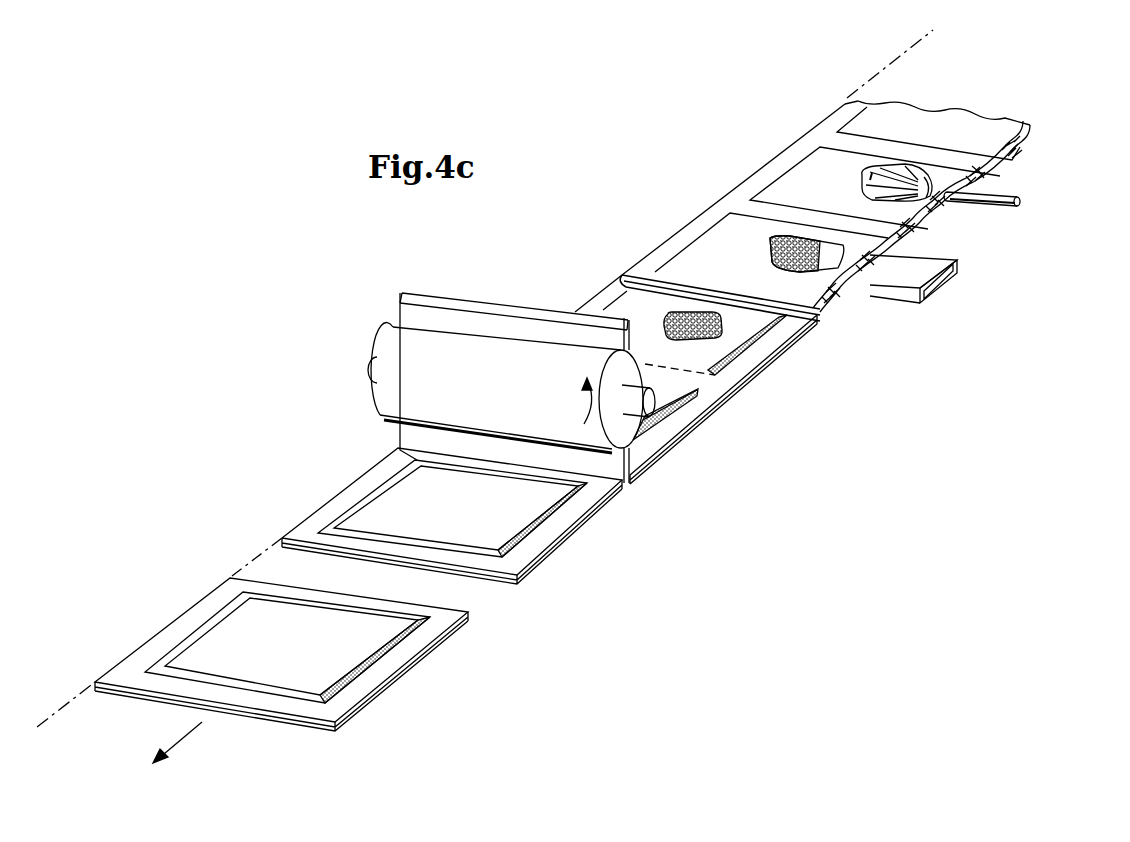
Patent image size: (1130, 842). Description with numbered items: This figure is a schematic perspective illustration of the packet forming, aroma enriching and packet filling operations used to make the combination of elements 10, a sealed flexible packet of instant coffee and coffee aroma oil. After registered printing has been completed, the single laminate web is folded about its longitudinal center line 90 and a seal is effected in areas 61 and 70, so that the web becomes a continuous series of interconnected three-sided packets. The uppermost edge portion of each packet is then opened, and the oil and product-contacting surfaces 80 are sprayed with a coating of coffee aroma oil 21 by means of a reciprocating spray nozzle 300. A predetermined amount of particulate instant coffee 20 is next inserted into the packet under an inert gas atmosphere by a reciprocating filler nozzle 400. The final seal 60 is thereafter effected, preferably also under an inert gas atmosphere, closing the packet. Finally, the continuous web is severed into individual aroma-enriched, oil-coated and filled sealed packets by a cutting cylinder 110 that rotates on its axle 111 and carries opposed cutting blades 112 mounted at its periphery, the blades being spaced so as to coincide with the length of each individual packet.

The combination of elements 10 is at (153, 607).
The particulate instant coffee 20 is at (733, 321).
The coffee aroma oil 21 is at (863, 173).
The final seal 60 is at (418, 640).
The seal area 61 is at (140, 657).
The seal area 70 is at (322, 598).
The oil and product-contacting surfaces 80 is at (248, 615).
The longitudinal center line 90 is at (893, 62).
The cutting cylinder 110 is at (362, 333).
The roller axle 111 is at (645, 406).
The cutting blades 112 is at (402, 297).
The reciprocating spray nozzle 300 is at (1000, 192).
The reciprocating filler nozzle 400 is at (927, 265).